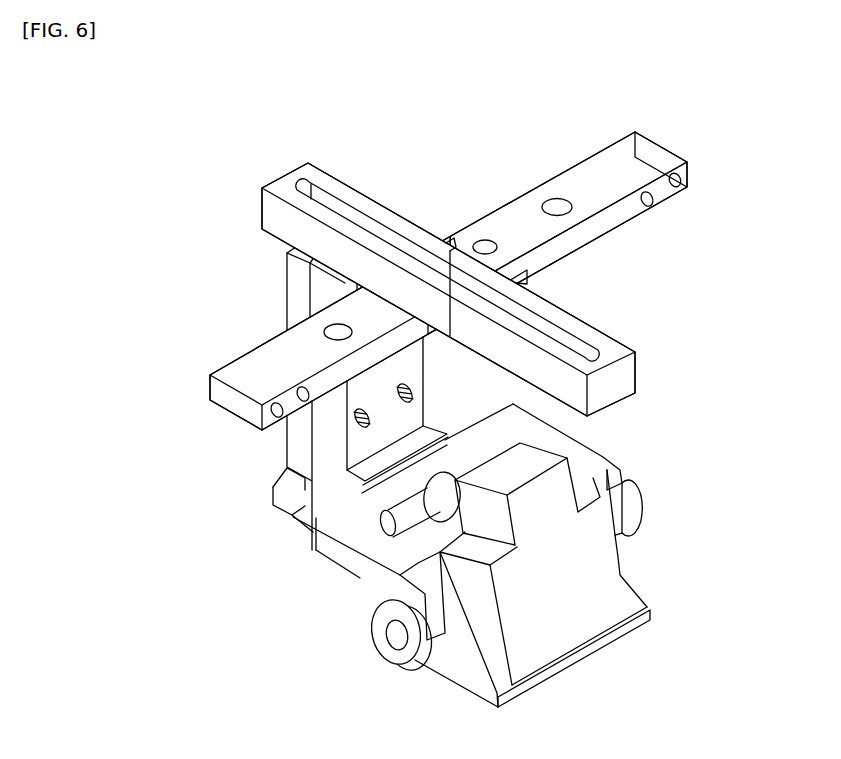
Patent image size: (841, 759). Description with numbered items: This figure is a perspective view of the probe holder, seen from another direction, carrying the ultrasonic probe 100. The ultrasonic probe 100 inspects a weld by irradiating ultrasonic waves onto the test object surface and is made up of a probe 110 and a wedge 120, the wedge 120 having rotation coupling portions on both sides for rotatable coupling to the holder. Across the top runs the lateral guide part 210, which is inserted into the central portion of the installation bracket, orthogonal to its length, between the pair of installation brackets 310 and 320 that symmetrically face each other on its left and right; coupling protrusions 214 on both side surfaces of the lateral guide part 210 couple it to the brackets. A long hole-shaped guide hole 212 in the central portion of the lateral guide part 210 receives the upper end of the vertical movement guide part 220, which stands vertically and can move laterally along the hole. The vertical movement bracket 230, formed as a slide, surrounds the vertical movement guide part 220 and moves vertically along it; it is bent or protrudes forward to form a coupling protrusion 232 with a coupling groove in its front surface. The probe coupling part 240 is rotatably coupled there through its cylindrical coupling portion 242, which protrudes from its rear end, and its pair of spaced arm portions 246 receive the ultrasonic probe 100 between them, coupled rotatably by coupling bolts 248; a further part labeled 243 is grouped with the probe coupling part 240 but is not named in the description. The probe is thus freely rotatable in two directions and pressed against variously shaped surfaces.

The ultrasonic probe 100 is at (615, 555).
The probe 110 is at (598, 566).
The wedge 120 is at (650, 620).
The lateral guide part 210 is at (494, 276).
The guide hole 212 is at (598, 349).
The coupling protrusion 214 is at (448, 245).
The vertical movement guide part 220 is at (290, 272).
The vertical movement bracket 230 is at (325, 443).
The coupling protrusion 232 is at (425, 430).
The probe coupling part 240 is at (285, 588).
The coupling portion 242 is at (314, 513).
The roller 243 is at (430, 488).
The arm portions 246 is at (345, 538).
The coupling bolts 248 is at (394, 634).
The installation bracket 310 is at (248, 365).
The installation bracket 320 is at (606, 166).